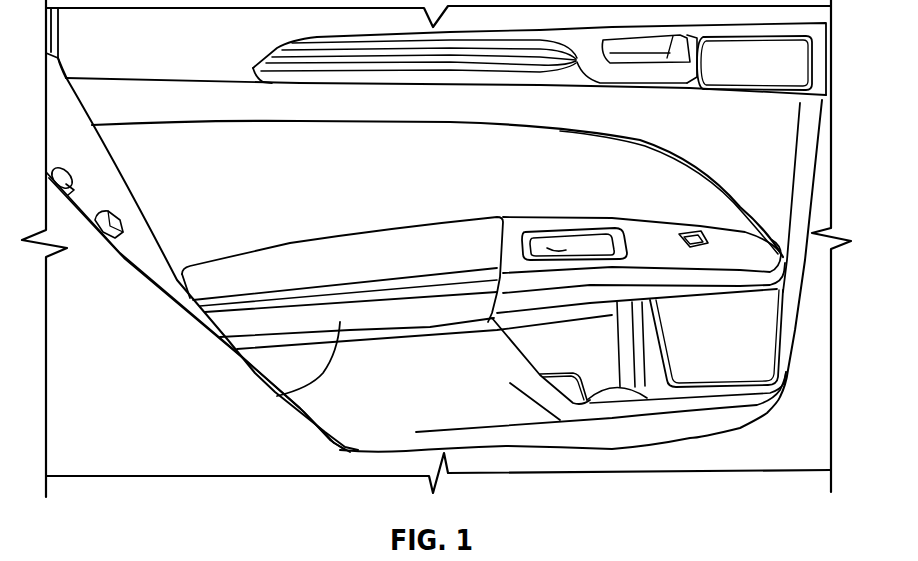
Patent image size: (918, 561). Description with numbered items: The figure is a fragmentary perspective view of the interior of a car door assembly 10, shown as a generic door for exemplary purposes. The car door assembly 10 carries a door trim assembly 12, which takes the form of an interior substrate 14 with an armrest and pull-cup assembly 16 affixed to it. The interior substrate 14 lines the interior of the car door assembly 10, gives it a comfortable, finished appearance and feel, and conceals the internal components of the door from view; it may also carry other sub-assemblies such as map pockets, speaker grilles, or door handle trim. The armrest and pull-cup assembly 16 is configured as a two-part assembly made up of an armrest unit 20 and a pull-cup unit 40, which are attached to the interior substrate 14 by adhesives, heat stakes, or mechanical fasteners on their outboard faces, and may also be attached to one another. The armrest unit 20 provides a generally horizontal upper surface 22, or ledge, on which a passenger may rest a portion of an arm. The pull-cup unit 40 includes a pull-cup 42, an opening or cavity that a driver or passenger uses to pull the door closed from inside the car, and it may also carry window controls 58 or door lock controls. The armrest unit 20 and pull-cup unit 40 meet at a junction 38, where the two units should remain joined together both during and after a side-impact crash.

The car door assembly 10 is at (163, 359).
The door trim assembly 12 is at (186, 246).
The interior substrate 14 is at (403, 197).
The armrest and pull-cup assembly 16 is at (522, 332).
The armrest unit 20 is at (277, 396).
The upper surface 22 is at (343, 262).
The junction 38 is at (515, 243).
The pull-cup unit 40 is at (630, 277).
The pull-cup 42 is at (553, 252).
The window controls 58 is at (697, 231).